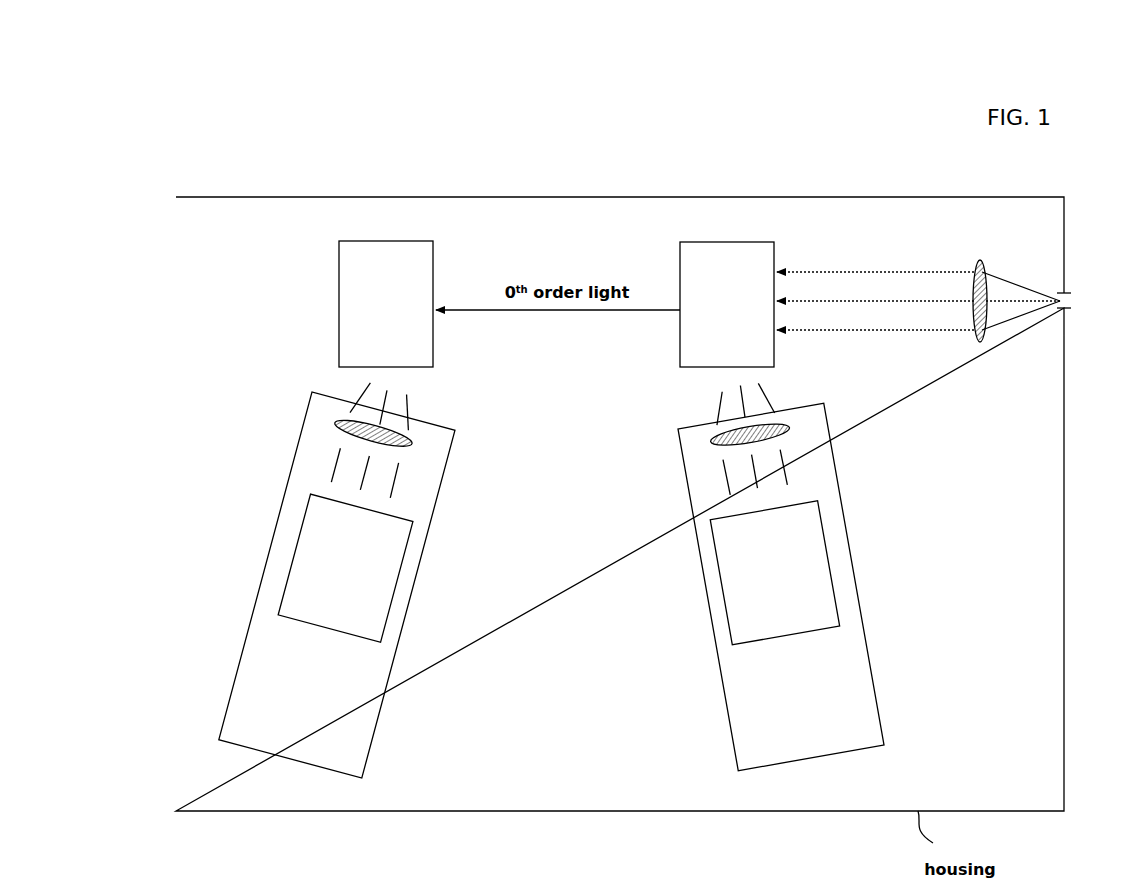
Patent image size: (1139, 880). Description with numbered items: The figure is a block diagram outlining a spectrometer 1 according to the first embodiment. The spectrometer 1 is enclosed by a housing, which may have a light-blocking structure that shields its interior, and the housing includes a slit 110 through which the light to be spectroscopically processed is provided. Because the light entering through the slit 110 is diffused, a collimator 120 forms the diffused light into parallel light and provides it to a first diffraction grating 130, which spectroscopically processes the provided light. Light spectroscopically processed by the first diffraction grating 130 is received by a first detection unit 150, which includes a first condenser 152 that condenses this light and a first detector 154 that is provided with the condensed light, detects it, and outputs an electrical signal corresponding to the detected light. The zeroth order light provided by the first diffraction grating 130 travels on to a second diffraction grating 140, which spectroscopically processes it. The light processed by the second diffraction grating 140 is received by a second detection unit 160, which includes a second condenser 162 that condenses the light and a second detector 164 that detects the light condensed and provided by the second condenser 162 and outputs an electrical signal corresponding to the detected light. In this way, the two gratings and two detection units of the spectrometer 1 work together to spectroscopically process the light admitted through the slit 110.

The spectrometer 1 is at (276, 142).
The slit 110 is at (1066, 308).
The collimator 120 is at (981, 342).
The first diffraction grating 130 is at (827, 304).
The second diffraction grating 140 is at (386, 304).
The first detection unit 150 is at (836, 560).
The first condenser 152 is at (786, 432).
The first detector 154 is at (774, 573).
The second detection unit 160 is at (399, 589).
The second condenser 162 is at (416, 446).
The second detector 164 is at (345, 568).